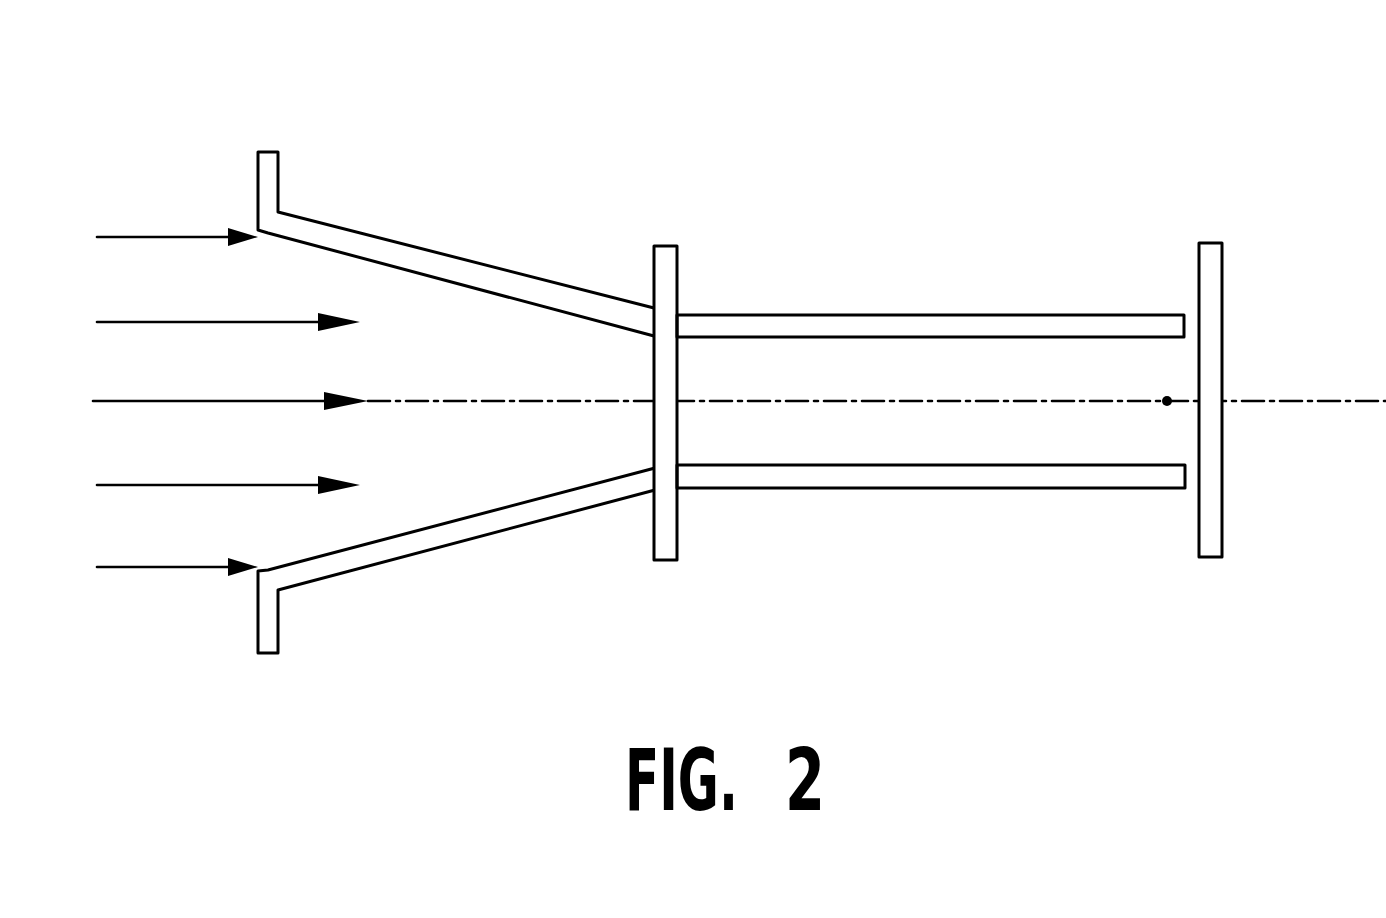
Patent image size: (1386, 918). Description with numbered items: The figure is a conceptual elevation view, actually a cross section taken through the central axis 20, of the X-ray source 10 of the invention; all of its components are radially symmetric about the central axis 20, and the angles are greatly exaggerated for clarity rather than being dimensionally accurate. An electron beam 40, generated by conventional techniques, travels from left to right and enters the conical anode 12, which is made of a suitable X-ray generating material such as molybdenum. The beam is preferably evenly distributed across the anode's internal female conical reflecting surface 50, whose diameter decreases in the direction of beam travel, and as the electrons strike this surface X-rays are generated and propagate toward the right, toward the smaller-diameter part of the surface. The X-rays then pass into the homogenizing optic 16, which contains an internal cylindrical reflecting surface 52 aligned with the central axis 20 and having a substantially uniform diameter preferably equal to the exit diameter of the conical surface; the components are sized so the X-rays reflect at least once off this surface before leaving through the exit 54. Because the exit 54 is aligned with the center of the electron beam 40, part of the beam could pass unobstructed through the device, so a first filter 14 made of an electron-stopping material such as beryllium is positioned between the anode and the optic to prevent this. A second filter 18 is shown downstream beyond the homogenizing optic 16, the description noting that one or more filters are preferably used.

The X-ray source 10 is at (740, 343).
The conical anode 12 is at (456, 235).
The first filter 14 is at (719, 355).
The homogenizing optic 16 is at (930, 274).
The second filter 18 is at (1141, 346).
The central axis 20 is at (877, 342).
The electron beam 40 is at (224, 367).
The female conical reflecting surface 50 is at (456, 566).
The internal cylindrical reflecting surface 52 is at (931, 530).
The exit 54 is at (1101, 494).